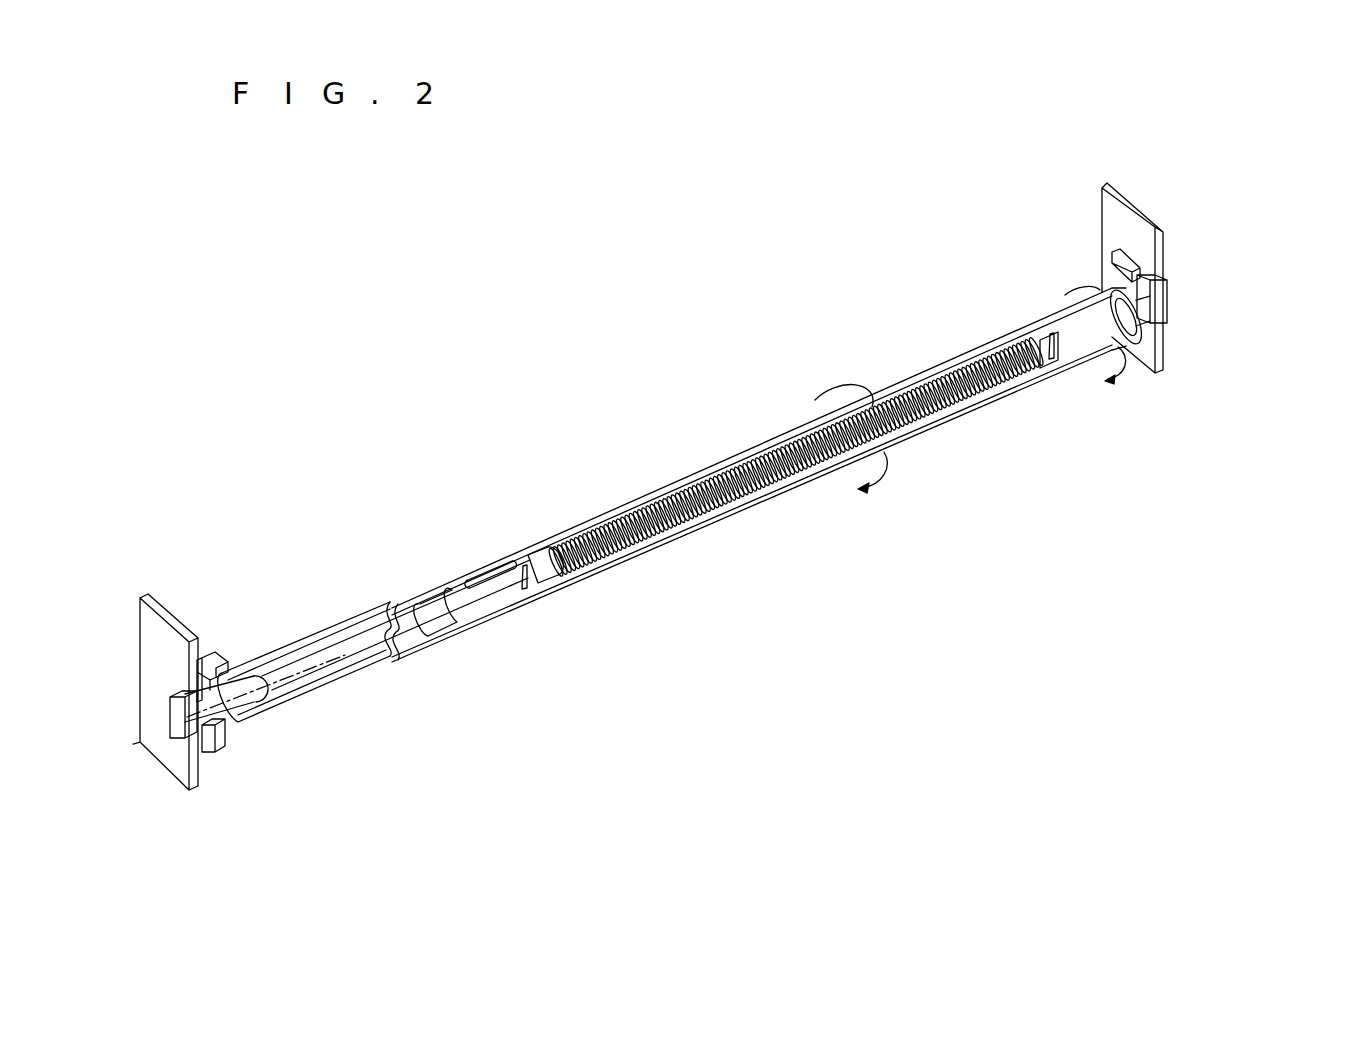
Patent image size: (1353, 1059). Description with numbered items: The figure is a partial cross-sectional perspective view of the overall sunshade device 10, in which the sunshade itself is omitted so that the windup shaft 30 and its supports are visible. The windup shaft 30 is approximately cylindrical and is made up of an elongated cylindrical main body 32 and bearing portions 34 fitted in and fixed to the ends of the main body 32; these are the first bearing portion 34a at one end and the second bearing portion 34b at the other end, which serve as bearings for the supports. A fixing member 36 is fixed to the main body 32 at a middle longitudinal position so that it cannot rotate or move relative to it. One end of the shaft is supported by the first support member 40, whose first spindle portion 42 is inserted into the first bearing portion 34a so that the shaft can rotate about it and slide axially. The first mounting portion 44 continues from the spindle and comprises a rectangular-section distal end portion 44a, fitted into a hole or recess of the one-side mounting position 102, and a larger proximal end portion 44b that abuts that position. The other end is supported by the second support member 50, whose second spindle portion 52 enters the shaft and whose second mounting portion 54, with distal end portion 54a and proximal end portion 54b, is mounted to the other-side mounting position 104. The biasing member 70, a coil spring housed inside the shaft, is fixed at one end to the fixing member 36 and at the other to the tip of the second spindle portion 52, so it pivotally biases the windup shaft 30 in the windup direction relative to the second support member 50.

The sunshade device 10 is at (437, 463).
The windup shaft 30 is at (429, 585).
The main body 32 is at (557, 535).
The bearing portions 34 is at (675, 552).
The first bearing portion 34a is at (252, 720).
The second bearing portion 34b is at (1125, 350).
The fixing member 36 is at (537, 588).
The first support member 40 is at (207, 660).
The first spindle portion 42 is at (268, 672).
The first mounting portion 44 is at (240, 847).
The distal end portion 44a is at (177, 737).
The proximal end portion 44b is at (218, 752).
The second support member 50 is at (1106, 248).
The second spindle portion 52 is at (1060, 365).
The second mounting portion 54 is at (1278, 210).
The distal end portion 54a is at (1175, 285).
The proximal end portion 54b is at (1132, 262).
The biasing member 70 is at (690, 537).
The one-side mounting position 102 is at (148, 597).
The other-side mounting position 104 is at (1124, 197).